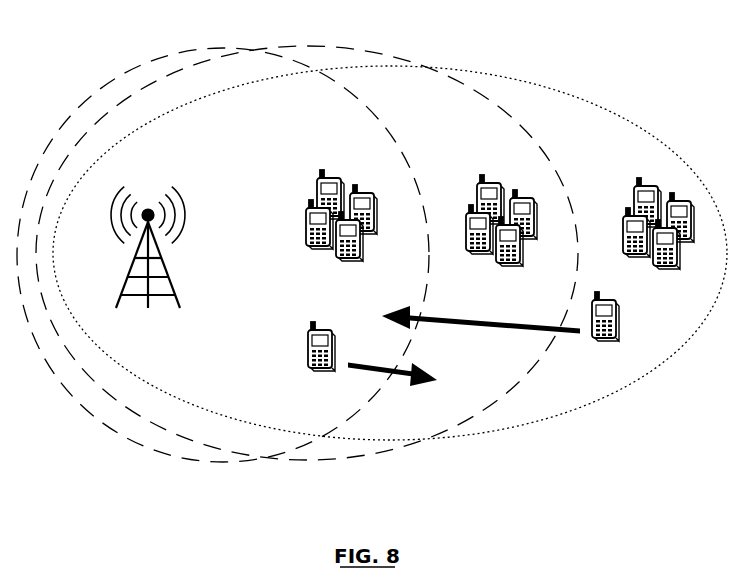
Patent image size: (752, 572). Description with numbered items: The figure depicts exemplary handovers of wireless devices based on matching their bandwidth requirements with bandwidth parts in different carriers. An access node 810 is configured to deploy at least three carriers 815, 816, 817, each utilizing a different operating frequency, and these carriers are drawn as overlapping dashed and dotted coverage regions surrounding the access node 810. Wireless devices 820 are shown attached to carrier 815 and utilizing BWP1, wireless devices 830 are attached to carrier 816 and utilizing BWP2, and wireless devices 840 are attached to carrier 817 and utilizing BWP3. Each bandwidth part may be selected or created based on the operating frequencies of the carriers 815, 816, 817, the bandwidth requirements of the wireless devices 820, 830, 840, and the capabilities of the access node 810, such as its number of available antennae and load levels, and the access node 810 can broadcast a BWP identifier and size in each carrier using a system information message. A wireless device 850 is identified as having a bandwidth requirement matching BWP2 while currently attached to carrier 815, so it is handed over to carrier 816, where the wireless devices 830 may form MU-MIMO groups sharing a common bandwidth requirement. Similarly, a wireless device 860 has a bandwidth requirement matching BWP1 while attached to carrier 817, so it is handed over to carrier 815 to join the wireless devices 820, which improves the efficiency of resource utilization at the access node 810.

The access node 810 is at (137, 268).
The carrier 815 is at (190, 50).
The carrier 816 is at (355, 48).
The carrier 817 is at (500, 75).
The wireless devices 820 is at (292, 176).
The wireless devices 830 is at (470, 155).
The wireless devices 840 is at (620, 172).
The wireless device 850 is at (306, 330).
The wireless device 860 is at (623, 332).